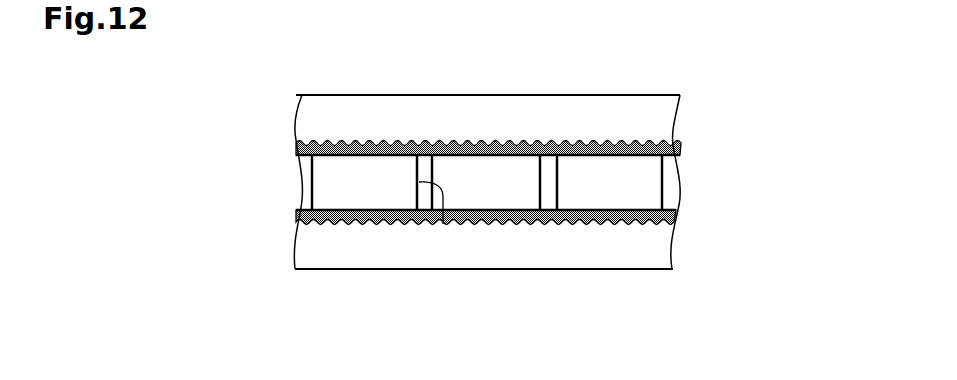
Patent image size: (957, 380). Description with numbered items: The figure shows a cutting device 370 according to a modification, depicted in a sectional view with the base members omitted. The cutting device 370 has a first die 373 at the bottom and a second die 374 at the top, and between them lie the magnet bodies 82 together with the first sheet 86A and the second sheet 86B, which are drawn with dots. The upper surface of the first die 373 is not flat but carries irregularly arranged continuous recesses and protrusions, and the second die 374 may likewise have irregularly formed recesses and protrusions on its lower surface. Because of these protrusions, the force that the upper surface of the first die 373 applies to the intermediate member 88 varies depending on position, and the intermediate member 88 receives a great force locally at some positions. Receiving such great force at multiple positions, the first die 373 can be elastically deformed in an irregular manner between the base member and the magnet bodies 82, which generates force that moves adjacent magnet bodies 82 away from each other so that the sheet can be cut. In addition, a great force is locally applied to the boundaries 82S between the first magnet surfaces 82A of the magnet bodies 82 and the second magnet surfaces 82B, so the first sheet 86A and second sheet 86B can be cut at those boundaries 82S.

The cutting device 370 is at (723, 82).
The second die 374 is at (642, 101).
The first die 373 is at (649, 260).
The second sheet 86B is at (672, 148).
The first sheet 86A is at (678, 213).
The magnet bodies 82 is at (325, 197).
The first magnet surfaces 82A is at (360, 141).
The second magnet surfaces 82B is at (432, 224).
The boundaries 82S is at (423, 141).
The intermediate member 88 is at (275, 178).